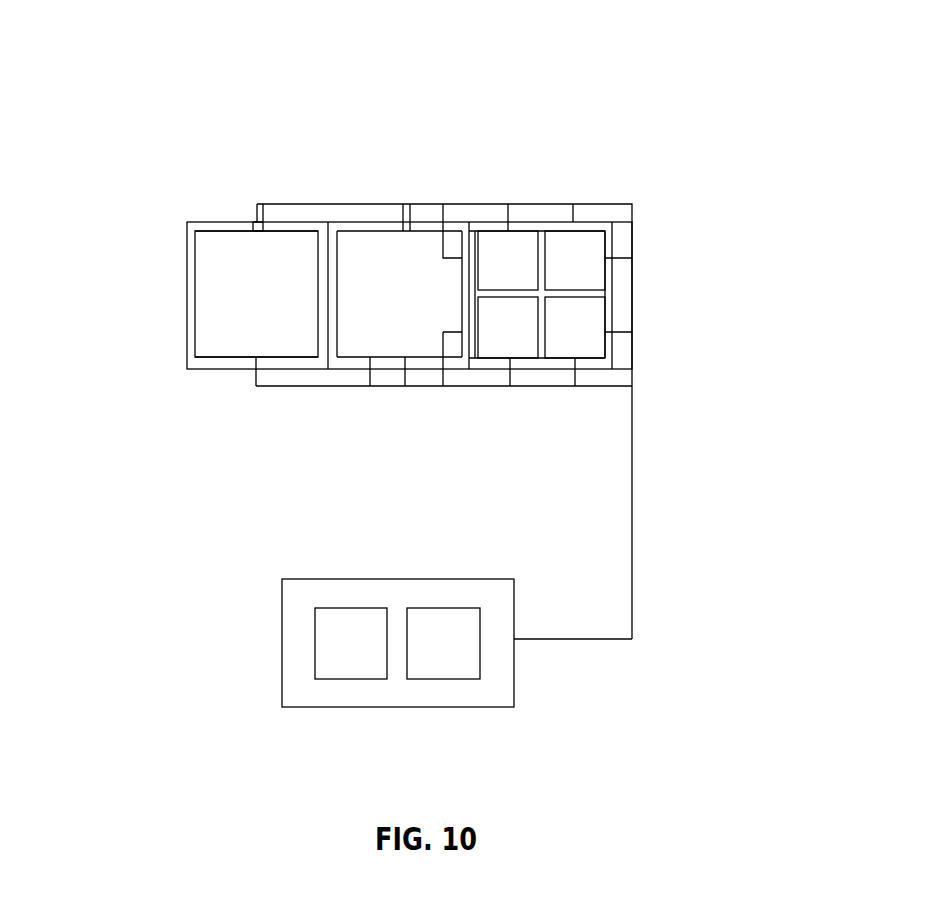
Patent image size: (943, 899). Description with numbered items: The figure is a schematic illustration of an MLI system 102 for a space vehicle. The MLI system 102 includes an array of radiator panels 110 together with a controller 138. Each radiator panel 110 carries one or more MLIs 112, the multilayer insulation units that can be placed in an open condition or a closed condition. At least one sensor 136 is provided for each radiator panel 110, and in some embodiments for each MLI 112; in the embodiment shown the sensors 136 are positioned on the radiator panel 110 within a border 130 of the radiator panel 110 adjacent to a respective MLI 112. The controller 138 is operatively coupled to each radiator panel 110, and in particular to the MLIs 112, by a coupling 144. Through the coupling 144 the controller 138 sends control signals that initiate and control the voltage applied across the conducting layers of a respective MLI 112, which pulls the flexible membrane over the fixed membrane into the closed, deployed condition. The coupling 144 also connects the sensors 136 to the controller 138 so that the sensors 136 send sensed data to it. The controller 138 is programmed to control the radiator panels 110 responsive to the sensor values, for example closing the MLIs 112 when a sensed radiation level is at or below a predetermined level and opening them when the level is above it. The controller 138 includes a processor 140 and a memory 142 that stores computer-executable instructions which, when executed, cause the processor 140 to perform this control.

The MLI system 102 is at (476, 100).
The radiator panel 110 is at (236, 201).
The MLI 112 is at (527, 240).
The border 130 is at (210, 222).
The sensor 136 is at (258, 228).
The controller 138 is at (293, 595).
The processor 140 is at (350, 668).
The memory 142 is at (443, 671).
The coupling 144 is at (634, 520).